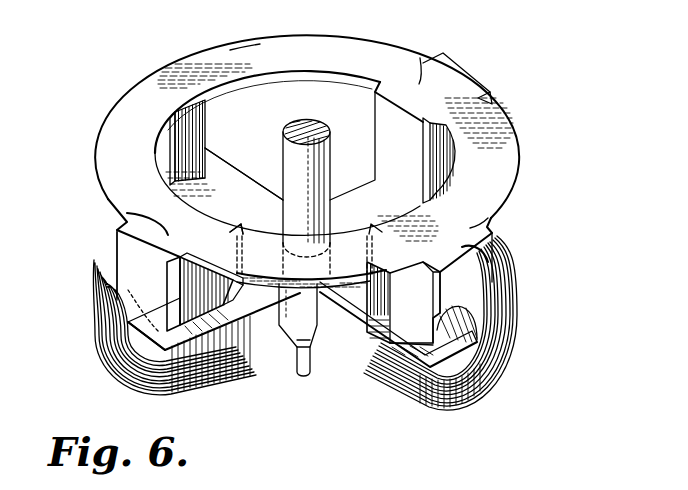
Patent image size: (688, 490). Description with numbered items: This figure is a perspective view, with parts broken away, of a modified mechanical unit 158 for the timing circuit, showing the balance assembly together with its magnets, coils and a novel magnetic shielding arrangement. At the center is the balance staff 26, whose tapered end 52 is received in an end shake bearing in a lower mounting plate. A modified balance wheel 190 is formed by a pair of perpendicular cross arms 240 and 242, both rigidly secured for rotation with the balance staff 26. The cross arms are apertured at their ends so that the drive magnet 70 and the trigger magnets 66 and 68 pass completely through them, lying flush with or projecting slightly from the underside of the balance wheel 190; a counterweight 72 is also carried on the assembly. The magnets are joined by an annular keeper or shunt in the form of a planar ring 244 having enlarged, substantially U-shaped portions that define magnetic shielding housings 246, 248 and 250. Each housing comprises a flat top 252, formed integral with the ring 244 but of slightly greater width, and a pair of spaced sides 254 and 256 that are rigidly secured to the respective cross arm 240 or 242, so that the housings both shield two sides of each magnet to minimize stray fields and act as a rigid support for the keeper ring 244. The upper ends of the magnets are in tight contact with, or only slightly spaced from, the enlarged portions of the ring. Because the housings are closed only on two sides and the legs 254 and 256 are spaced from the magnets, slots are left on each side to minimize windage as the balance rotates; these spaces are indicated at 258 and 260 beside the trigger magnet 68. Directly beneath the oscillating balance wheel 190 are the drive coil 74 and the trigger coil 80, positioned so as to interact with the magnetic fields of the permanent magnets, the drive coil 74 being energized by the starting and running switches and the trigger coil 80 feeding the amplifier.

The mechanical unit 158 is at (150, 97).
The planar ring 244 is at (245, 46).
The flat top 252 is at (422, 58).
The magnetic shielding housing 246 is at (497, 92).
The magnetic shielding housing 250 is at (127, 246).
The side 254 is at (133, 280).
The magnetic shielding housing 248 is at (490, 272).
The counterweight 72 is at (200, 125).
The trigger magnet 66 is at (443, 153).
The drive magnet 70 is at (200, 288).
The trigger magnet 68 is at (407, 290).
The balance staff 26 is at (335, 128).
The tapered end 52 is at (293, 370).
The balance wheel 190 is at (230, 170).
The side 256 is at (240, 228).
The space 258 is at (335, 310).
The cross arm 242 is at (197, 340).
The cross arm 240 is at (400, 343).
The space 260 is at (453, 323).
The drive coil 74 is at (103, 340).
The trigger coil 80 is at (497, 350).